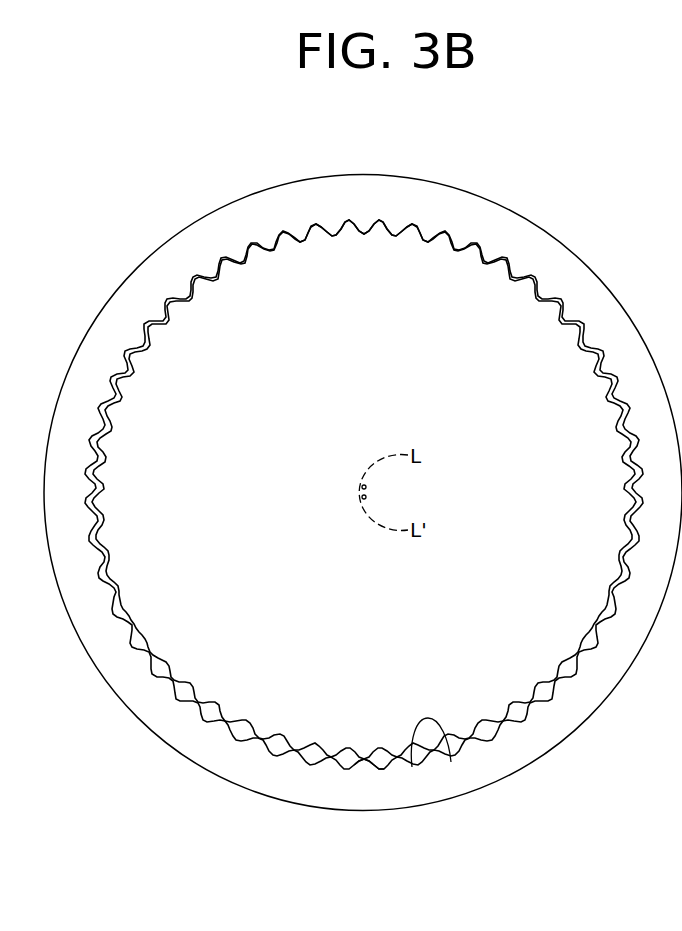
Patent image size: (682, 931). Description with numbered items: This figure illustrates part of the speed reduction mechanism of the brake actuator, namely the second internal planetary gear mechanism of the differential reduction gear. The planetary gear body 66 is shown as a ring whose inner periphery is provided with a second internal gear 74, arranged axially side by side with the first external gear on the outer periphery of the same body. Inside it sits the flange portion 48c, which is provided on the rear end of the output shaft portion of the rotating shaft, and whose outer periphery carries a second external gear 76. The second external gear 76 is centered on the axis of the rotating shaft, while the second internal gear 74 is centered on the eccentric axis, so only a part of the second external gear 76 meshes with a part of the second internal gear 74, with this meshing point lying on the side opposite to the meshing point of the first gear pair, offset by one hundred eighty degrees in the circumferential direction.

The planetary gear body 66 is at (480, 222).
The flange portion 48c is at (495, 315).
The second internal gear 74 is at (447, 738).
The second external gear 76 is at (375, 748).